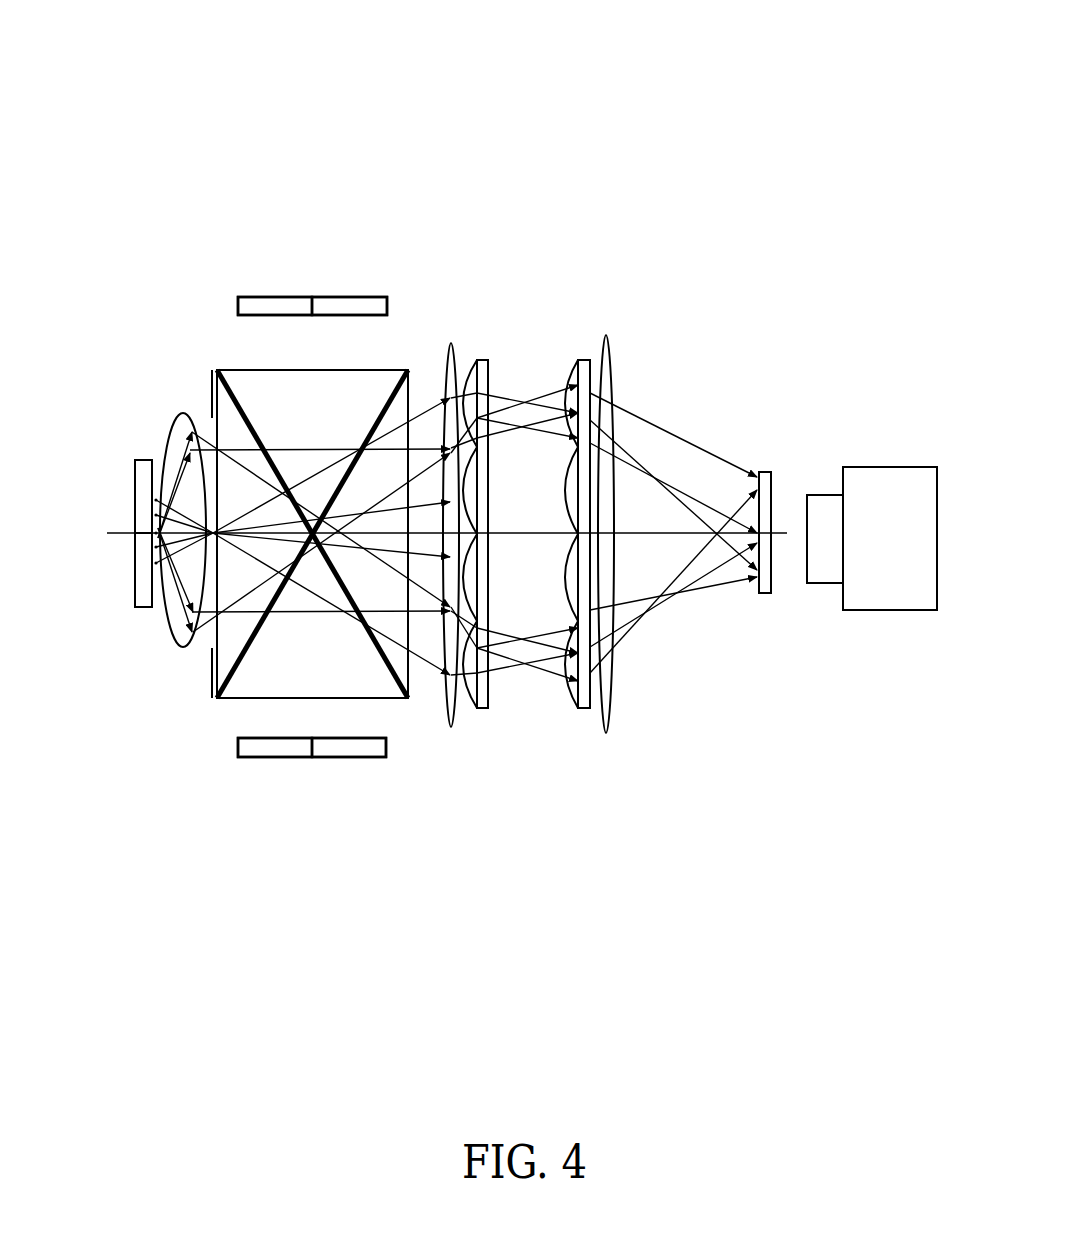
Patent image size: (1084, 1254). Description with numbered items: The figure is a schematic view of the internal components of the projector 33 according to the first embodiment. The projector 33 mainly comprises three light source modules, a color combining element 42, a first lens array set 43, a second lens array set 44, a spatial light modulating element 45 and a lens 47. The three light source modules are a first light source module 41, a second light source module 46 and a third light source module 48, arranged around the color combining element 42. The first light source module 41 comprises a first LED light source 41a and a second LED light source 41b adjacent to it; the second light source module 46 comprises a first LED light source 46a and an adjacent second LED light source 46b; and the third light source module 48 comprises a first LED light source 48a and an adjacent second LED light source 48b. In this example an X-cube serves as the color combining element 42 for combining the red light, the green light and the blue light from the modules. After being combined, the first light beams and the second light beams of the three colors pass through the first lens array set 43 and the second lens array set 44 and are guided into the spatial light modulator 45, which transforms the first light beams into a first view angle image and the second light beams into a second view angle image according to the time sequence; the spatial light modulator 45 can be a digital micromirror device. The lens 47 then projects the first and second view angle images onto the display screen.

The projector 33 is at (403, 70).
The first light source module 41 is at (105, 512).
The first LED light source 41a is at (135, 493).
The second LED light source 41b is at (143, 610).
The color combining element 42 is at (288, 368).
The first lens array set 43 is at (470, 370).
The second lens array set 44 is at (580, 360).
The spatial light modulating element 45 is at (753, 608).
The second light source module 46 is at (367, 233).
The first LED light source 46a is at (270, 308).
The second LED light source 46b is at (345, 308).
The lens 47 is at (875, 467).
The third light source module 48 is at (367, 823).
The first LED light source 48a is at (268, 745).
The second LED light source 48b is at (343, 745).